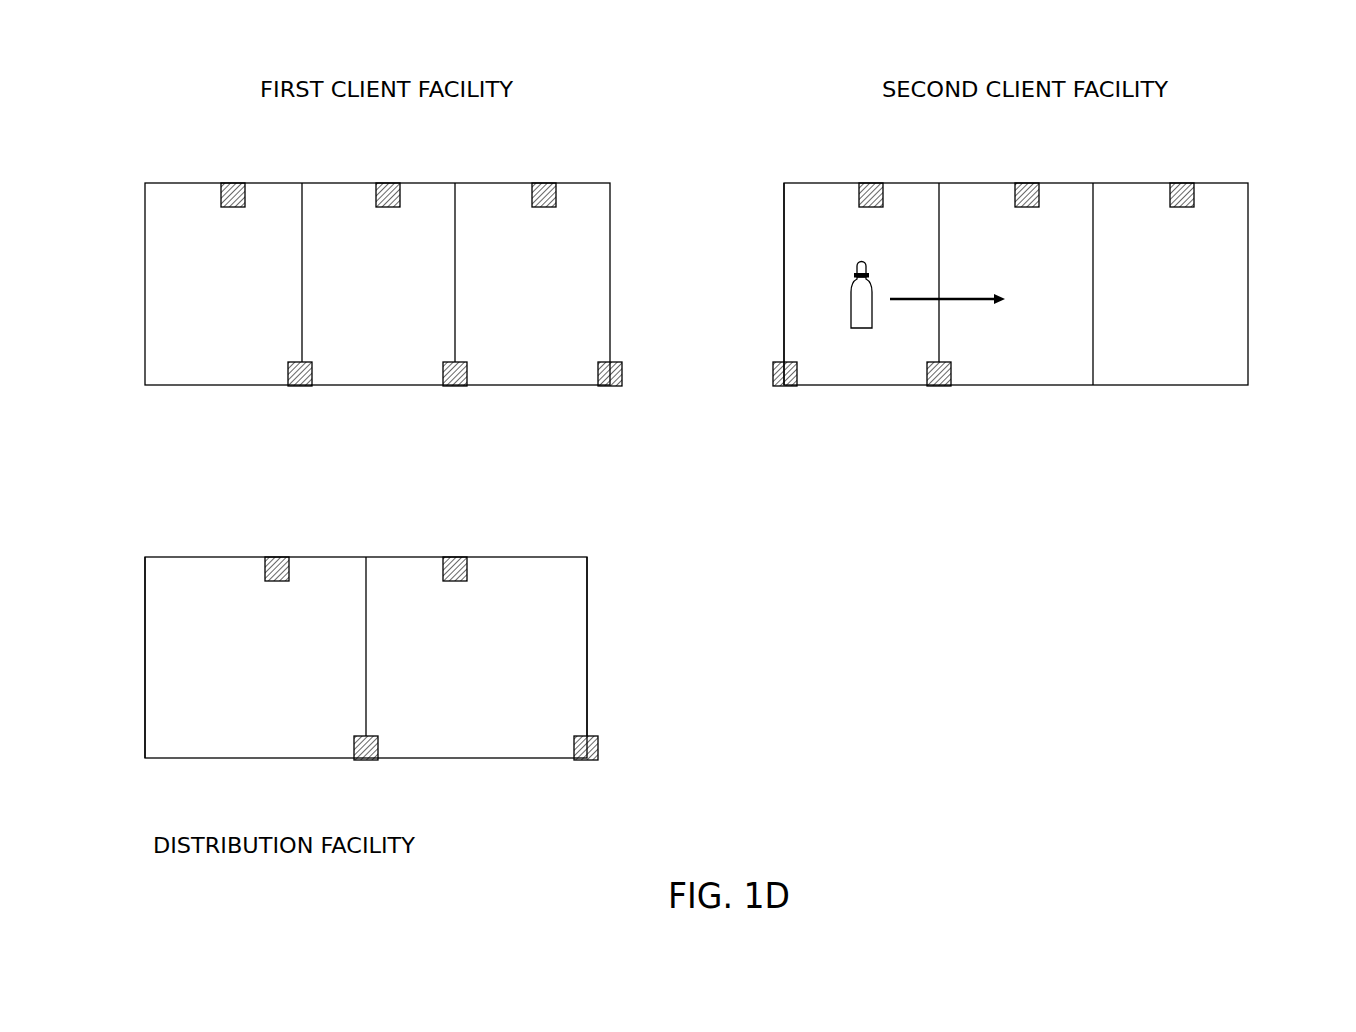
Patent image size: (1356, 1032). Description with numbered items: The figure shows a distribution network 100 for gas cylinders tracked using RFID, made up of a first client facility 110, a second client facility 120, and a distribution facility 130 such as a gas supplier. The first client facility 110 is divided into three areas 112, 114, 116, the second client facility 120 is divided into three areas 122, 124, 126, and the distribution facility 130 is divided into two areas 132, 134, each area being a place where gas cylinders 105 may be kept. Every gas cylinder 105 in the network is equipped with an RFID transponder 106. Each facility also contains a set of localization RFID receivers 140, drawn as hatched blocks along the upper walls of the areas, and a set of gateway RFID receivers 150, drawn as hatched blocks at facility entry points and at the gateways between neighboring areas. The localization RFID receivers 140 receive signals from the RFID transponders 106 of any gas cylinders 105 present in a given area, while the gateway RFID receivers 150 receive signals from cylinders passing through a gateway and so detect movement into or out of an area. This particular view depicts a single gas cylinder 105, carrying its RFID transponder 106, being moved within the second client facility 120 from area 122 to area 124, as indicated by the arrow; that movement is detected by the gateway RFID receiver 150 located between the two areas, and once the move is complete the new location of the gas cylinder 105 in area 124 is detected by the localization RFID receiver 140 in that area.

The distribution network 100 is at (1281, 92).
The first client facility 110 is at (145, 231).
The area 112 is at (231, 284).
The area 114 is at (384, 284).
The area 116 is at (538, 284).
The second client facility 120 is at (784, 233).
The area 122 is at (806, 284).
The area 124 is at (961, 272).
The area 126 is at (1143, 284).
The distribution facility 130 is at (145, 586).
The area 132 is at (167, 657).
The area 134 is at (476, 646).
The localization RFID receiver 140 is at (1034, 152).
The gateway RFID receiver 150 is at (366, 760).
The gas cylinder 105 is at (860, 329).
The RFID transponder 106 is at (854, 275).